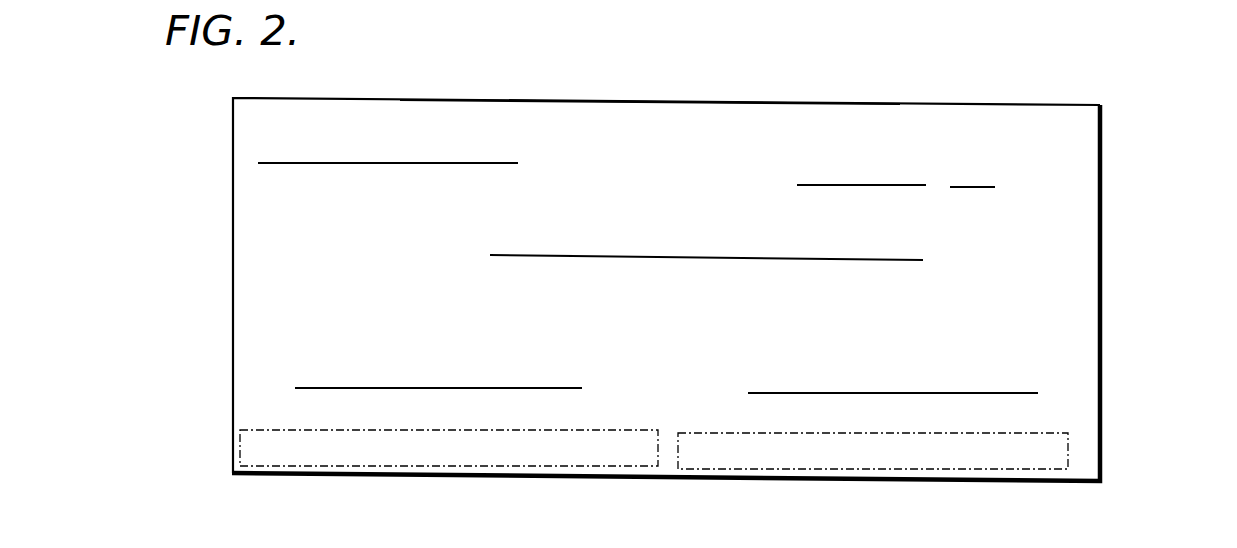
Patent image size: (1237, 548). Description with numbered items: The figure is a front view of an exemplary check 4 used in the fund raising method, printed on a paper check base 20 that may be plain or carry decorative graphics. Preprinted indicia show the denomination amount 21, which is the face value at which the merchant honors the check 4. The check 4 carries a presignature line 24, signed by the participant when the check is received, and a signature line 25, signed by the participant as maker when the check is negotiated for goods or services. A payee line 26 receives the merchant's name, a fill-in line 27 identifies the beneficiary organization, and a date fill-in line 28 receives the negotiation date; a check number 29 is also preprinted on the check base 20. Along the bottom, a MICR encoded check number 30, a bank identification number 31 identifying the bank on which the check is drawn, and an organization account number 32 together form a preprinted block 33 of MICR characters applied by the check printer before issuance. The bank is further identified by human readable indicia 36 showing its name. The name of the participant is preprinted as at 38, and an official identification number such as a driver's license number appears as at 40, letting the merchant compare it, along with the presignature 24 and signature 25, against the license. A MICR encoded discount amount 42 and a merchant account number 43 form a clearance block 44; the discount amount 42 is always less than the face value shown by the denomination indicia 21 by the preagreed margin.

The check 4 is at (437, 98).
The check base 20 is at (653, 115).
The denomination amount 21 is at (1022, 223).
The presignature line 24 is at (318, 386).
The signature line 25 is at (1005, 393).
The payee line 26 is at (563, 255).
The organization fill-in line 27 is at (278, 157).
The date fill-in line 28 is at (807, 185).
The check number 29 is at (970, 128).
The MICR encoded check number 30 is at (288, 466).
The bank identification number 31 is at (418, 466).
The organization account number 32 is at (598, 466).
The preprinted block 33 is at (272, 428).
The bank name indicia 36 is at (1015, 300).
The participant name 38 is at (360, 292).
The official identification number 40 is at (336, 321).
The MICR encoded discount amount 42 is at (978, 468).
The merchant account number 43 is at (765, 468).
The clearance block 44 is at (1028, 440).